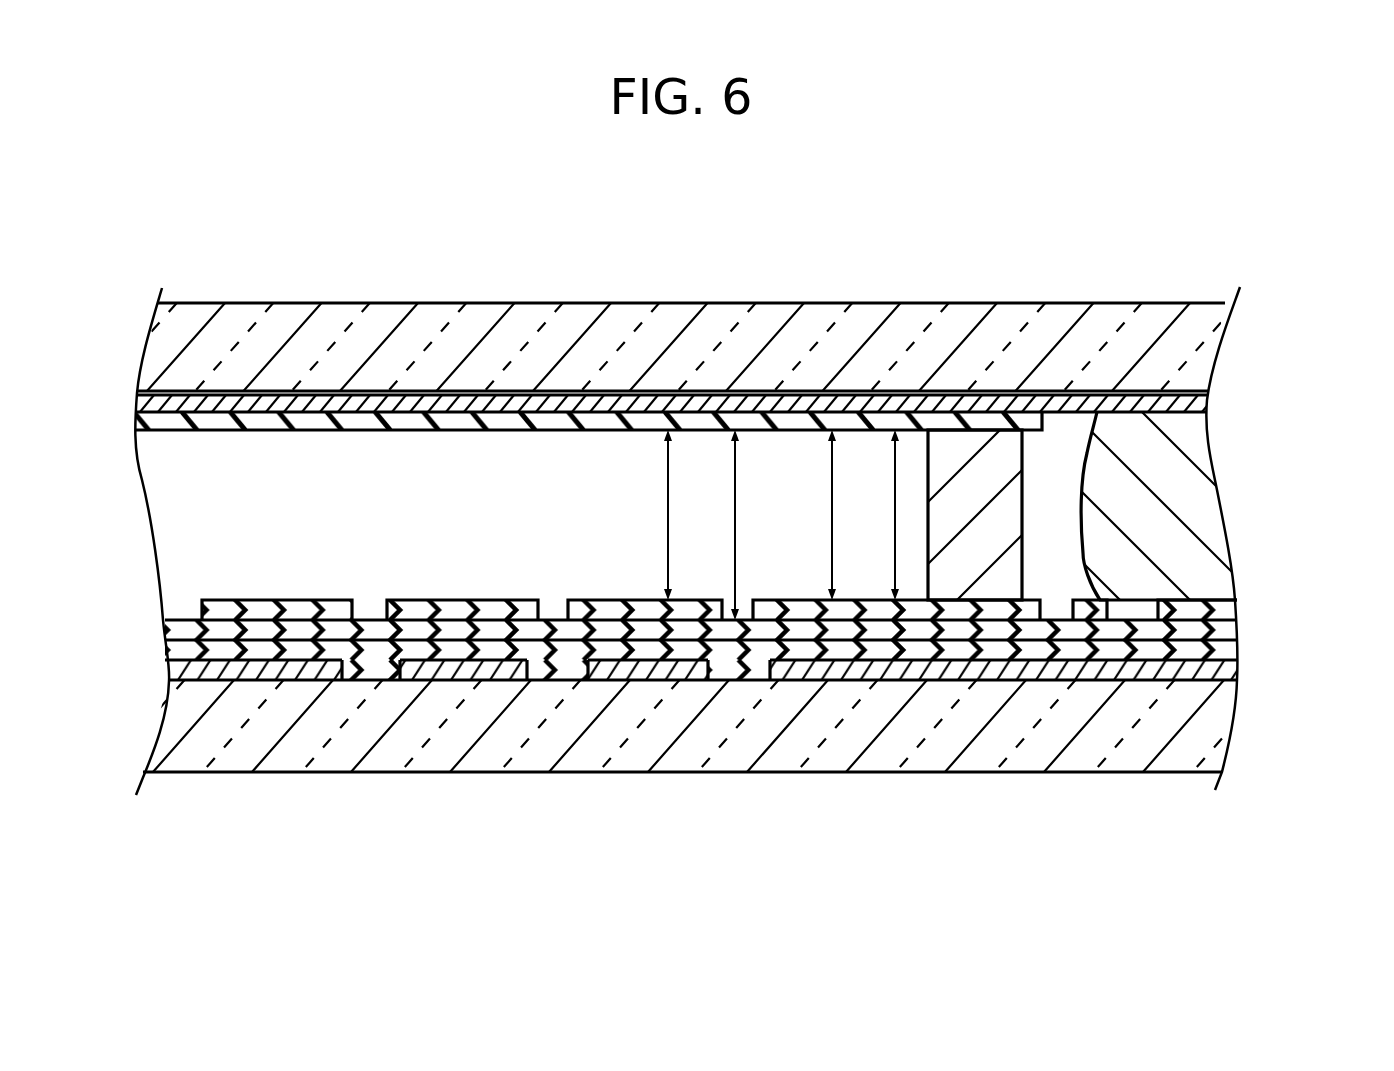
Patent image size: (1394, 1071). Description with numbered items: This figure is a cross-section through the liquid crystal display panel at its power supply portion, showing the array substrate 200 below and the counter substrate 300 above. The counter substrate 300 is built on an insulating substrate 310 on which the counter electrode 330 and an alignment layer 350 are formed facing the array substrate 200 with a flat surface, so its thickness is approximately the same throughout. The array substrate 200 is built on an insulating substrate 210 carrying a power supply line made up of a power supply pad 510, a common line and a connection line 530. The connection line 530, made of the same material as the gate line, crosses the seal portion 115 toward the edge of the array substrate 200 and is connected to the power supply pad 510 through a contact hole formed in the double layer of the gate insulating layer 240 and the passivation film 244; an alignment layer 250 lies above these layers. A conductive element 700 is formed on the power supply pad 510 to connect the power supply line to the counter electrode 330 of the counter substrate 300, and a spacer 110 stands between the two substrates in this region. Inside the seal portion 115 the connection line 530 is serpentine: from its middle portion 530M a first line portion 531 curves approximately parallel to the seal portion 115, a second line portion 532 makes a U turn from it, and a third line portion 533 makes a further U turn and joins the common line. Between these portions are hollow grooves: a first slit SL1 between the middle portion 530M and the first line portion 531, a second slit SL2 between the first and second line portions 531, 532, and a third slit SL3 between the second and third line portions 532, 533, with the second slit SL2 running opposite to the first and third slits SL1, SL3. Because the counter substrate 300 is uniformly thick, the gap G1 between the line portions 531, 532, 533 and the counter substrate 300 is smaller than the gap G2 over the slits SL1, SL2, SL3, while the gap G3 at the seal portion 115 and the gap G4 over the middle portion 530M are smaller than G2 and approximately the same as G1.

The counter substrate 300 is at (712, 352).
The insulating substrate 310 is at (150, 352).
The counter electrode 330 is at (142, 405).
The alignment layer 350 is at (140, 428).
The column spacer 110 is at (985, 465).
The conductive element 700 is at (1210, 527).
The array substrate 200 is at (698, 733).
The insulating substrate 210 is at (165, 741).
The passivation film 244 is at (168, 643).
The gate insulating layer 240 is at (168, 672).
The alignment layer 250 is at (166, 630).
The power supply pad 510 is at (1235, 604).
The connection line 530 is at (751, 772).
The third line portion 533 is at (283, 672).
The second line portion 532 is at (465, 672).
The first line portion 531 is at (640, 672).
The middle portion 530M is at (797, 672).
The first slit SL1 is at (770, 695).
The second slit SL2 is at (588, 695).
The third slit SL3 is at (405, 695).
The seal portion 115 is at (920, 795).
The gap G1 is at (665, 473).
The gap G2 is at (733, 487).
The gap G3 is at (892, 480).
The gap G4 is at (830, 478).